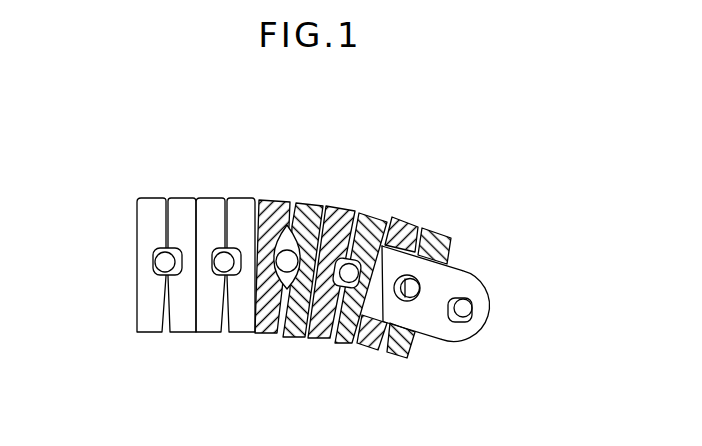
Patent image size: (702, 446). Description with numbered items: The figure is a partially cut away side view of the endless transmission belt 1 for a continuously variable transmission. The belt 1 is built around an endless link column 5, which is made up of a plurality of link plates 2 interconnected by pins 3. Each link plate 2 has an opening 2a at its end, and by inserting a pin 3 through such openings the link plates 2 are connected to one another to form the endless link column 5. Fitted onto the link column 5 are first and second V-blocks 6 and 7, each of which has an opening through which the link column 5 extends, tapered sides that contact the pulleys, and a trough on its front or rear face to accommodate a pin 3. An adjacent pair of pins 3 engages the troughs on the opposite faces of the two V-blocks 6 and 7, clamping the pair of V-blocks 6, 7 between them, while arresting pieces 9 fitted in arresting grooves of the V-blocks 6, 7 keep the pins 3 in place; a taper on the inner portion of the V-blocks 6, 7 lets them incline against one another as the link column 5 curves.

The belt 1 is at (130, 178).
The arresting piece 9 is at (284, 228).
The second V-block 7 is at (372, 221).
The first V-block 6 is at (393, 222).
The link plate 2 is at (458, 340).
The opening 2a is at (477, 306).
The endless link column 5 is at (490, 324).
The pin 3 is at (408, 312).